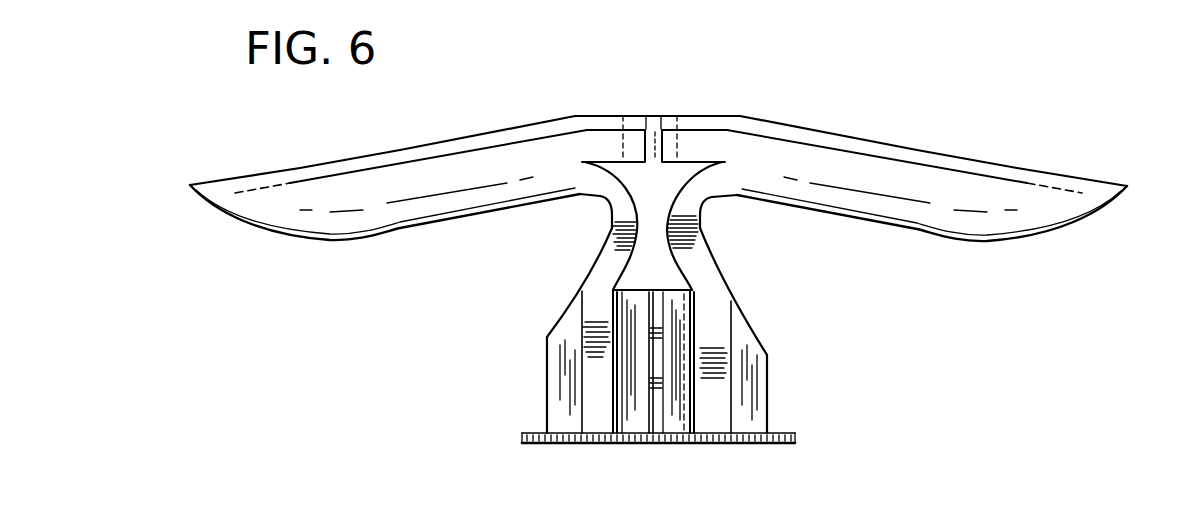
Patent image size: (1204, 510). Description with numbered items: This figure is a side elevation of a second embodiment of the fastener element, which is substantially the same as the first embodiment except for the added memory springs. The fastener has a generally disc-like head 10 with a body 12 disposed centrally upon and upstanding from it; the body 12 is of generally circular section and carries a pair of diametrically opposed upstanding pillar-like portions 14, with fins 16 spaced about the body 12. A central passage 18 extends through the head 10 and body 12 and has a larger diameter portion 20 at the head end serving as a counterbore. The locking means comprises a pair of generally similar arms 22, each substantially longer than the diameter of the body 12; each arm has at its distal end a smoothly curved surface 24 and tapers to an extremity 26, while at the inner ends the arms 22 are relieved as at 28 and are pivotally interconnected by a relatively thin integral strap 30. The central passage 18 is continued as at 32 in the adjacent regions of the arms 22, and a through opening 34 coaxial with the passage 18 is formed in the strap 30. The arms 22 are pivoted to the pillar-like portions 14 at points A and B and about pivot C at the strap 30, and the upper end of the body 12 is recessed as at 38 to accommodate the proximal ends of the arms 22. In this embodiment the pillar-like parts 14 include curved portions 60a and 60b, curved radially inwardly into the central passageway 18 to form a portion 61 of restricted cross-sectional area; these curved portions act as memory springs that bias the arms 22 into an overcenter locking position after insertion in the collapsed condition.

The head 10 is at (521, 432).
The body 12 is at (734, 335).
The pillar-like portions 14 is at (594, 297).
The fins 16 is at (557, 383).
The central passage 18 is at (608, 350).
The larger diameter portion 20 is at (625, 446).
The arms 22 is at (430, 142).
The smoothly curved surface 24 is at (265, 235).
The extremity 26 is at (192, 186).
The relief 28 is at (676, 164).
The strap 30 is at (650, 160).
The passage continuation 32 is at (683, 149).
The through opening 34 is at (634, 131).
The recess 38 is at (652, 278).
The curved portion 60a is at (701, 223).
The curved portion 60b is at (613, 226).
The portion of restricted cross-sectional area 61 is at (658, 228).